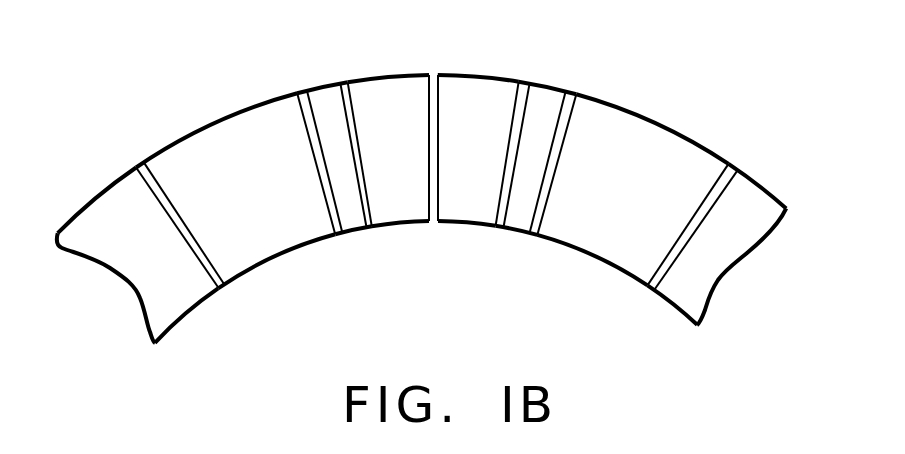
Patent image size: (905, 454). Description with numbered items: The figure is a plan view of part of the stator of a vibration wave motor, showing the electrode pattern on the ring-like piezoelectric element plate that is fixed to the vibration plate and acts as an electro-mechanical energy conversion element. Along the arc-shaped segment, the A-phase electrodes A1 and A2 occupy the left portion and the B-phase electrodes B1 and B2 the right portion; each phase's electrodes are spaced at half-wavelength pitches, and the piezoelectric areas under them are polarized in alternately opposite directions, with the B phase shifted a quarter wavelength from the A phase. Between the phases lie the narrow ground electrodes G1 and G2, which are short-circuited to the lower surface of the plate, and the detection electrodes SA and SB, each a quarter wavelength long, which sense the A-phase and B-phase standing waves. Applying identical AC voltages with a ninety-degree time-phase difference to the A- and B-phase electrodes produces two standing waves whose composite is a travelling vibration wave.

The A-phase electrode A1 is at (227, 133).
The A-phase electrode A2 is at (103, 212).
The B-phase electrode B1 is at (662, 140).
The B-phase electrode B2 is at (750, 208).
The ground electrode G1 is at (327, 98).
The ground electrode G2 is at (552, 98).
The SA-phase electrode SA is at (400, 87).
The SB-phase electrode SB is at (485, 87).